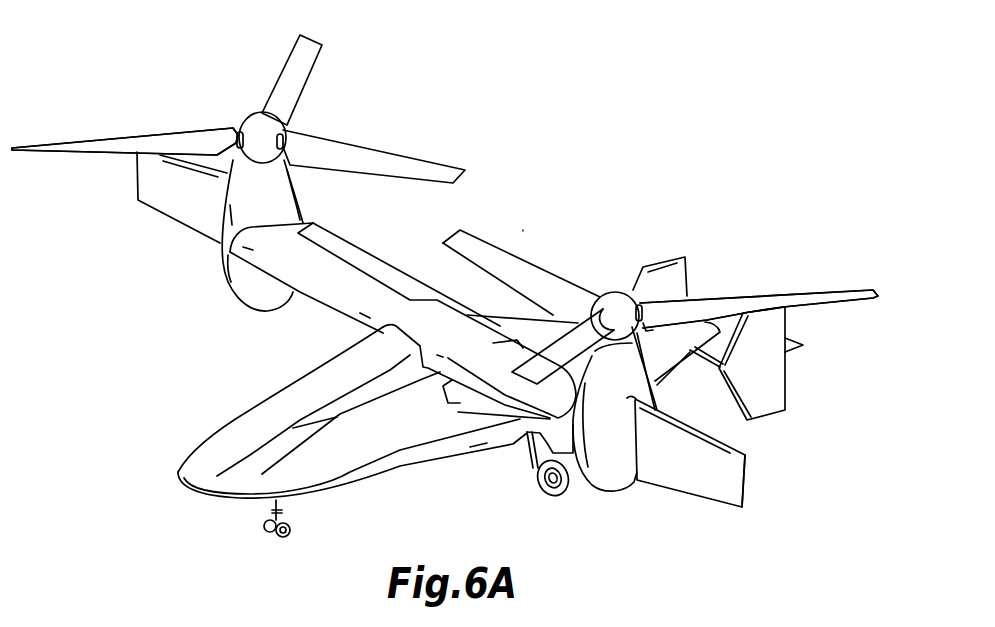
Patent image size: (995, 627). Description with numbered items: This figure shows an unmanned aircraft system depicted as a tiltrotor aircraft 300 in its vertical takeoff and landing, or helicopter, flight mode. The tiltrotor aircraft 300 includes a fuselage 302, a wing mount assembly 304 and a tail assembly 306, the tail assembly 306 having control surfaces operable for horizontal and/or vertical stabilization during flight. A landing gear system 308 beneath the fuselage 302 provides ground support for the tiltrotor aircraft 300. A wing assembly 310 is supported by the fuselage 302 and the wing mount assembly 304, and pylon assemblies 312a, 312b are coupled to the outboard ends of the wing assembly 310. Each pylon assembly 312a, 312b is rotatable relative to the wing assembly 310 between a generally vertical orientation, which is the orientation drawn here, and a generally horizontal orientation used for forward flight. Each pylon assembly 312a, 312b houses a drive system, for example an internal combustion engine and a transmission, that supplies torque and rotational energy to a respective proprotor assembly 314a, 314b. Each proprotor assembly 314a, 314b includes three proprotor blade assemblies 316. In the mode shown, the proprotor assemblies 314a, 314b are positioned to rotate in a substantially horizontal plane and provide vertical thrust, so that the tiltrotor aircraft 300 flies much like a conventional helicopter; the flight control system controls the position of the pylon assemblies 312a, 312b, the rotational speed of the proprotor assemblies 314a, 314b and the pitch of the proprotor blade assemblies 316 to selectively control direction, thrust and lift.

The tiltrotor aircraft 300 is at (523, 231).
The fuselage 302 is at (350, 450).
The wing mount assembly 304 is at (392, 328).
The tail assembly 306 is at (773, 393).
The landing gear system 308 is at (550, 493).
The wing assembly 310 is at (347, 277).
The pylon assembly 312a is at (623, 477).
The pylon assembly 312b is at (237, 279).
The proprotor assembly 314a is at (757, 300).
The proprotor assembly 314b is at (82, 145).
The proprotor blade assemblies 316 is at (188, 138).